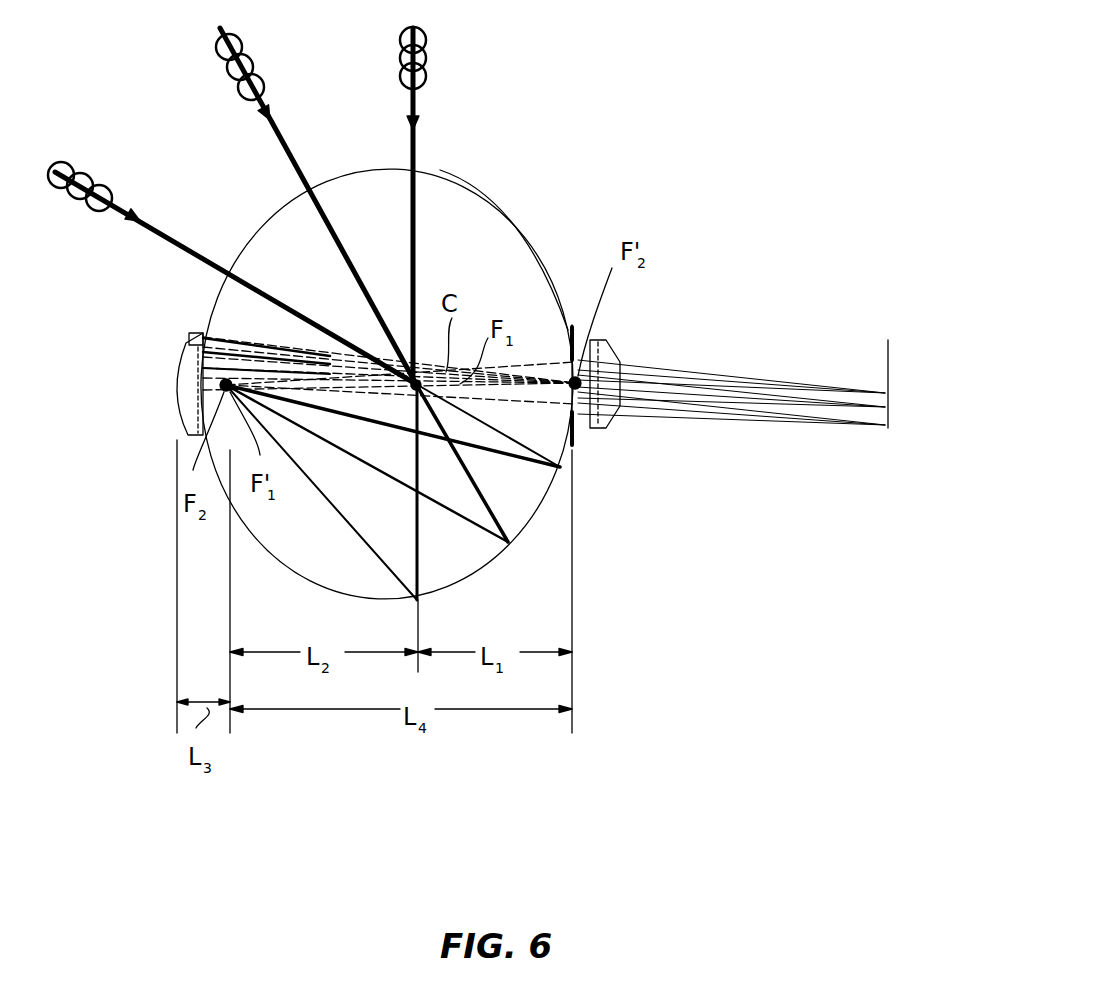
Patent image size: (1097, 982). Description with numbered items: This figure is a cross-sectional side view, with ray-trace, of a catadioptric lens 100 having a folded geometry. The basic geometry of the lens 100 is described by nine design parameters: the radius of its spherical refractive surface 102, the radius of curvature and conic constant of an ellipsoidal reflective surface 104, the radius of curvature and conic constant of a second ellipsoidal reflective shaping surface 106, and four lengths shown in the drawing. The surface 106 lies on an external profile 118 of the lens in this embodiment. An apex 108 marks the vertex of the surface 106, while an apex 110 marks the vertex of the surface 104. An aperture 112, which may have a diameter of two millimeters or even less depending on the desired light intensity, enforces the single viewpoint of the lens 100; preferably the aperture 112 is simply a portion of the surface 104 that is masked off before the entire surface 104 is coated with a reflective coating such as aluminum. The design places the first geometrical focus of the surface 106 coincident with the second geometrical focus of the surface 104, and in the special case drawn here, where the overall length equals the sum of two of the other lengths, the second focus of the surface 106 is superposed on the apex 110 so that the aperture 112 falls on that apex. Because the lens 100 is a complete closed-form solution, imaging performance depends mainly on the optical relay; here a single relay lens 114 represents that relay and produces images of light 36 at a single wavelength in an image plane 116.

The light 36 is at (96, 160).
The catadioptric lens 100 is at (690, 156).
The spherical refractive surface 102 is at (340, 182).
The ellipsoidal reflective surface 104 is at (505, 214).
The second ellipsoidal reflective shaping surface 106 is at (178, 430).
The apex of surface 106 108 is at (175, 385).
The apex of surface 104 110 is at (572, 328).
The aperture 112 is at (575, 440).
The relay lens 114 is at (606, 340).
The image plane 116 is at (888, 345).
The external profile 118 is at (193, 333).